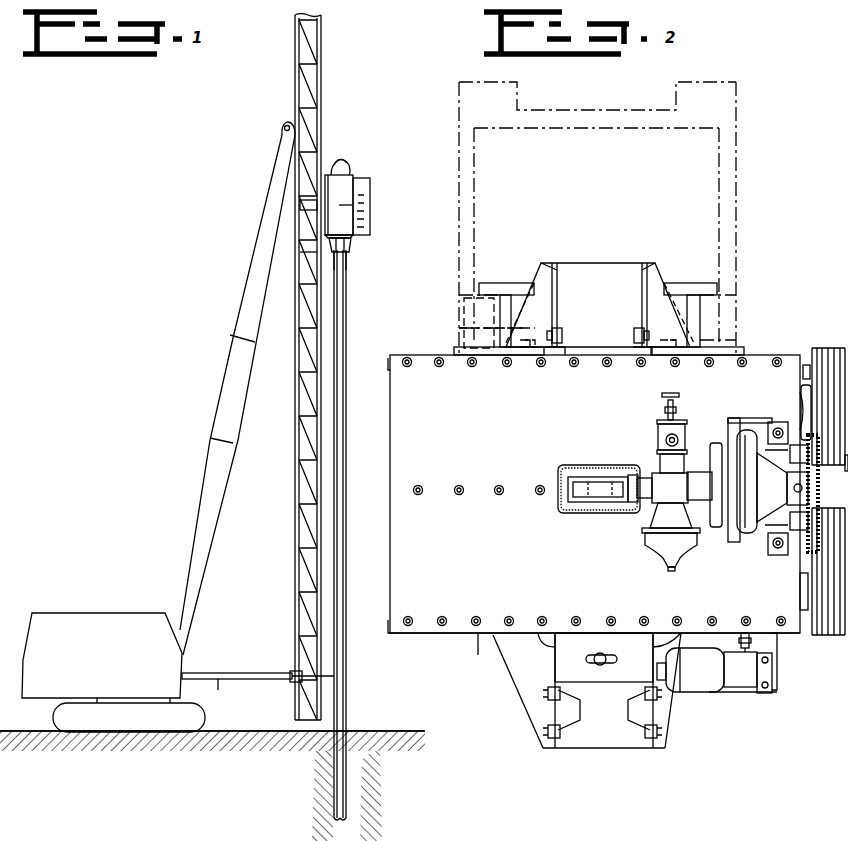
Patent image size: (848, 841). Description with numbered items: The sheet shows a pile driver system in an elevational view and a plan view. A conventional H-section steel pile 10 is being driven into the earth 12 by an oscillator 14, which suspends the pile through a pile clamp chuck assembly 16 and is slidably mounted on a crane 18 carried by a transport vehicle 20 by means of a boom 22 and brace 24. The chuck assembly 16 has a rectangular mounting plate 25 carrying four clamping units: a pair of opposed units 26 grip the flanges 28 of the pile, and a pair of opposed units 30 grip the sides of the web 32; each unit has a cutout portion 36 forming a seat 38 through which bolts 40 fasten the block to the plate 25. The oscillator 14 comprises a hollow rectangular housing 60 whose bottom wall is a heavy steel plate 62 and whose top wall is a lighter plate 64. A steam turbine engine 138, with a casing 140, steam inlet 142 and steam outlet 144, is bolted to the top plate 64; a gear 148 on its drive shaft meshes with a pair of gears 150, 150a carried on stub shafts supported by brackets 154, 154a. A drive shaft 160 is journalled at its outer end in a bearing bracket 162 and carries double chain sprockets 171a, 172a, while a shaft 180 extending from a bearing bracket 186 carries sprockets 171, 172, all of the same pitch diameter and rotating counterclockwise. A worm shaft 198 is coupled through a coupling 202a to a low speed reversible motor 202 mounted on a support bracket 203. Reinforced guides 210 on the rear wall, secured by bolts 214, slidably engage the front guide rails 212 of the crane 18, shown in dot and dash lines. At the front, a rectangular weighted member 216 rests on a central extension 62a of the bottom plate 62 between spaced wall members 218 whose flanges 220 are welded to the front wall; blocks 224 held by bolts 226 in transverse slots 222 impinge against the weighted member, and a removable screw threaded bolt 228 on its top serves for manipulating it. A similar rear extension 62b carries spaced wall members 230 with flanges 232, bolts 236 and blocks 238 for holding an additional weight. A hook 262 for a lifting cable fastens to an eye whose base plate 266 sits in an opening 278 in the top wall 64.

In FIG. 1, the H-section steel pile 10 is at (352, 675).
In FIG. 1, the earth 12 is at (268, 732).
In FIG. 1, the oscillator 14 is at (352, 177).
In FIG. 2, the oscillator 14 is at (462, 643).
In FIG. 1, the pile clamp chuck assembly 16 is at (350, 242).
In FIG. 1, the crane 18 is at (296, 479).
In FIG. 2, the crane 18 is at (739, 162).
In FIG. 1, the transport vehicle 20 is at (93, 615).
In FIG. 1, the boom 22 is at (221, 386).
In FIG. 1, the brace 24 is at (250, 673).
In FIG. 2, the mounting plate 25 is at (460, 840).
In FIG. 1, the clamping units 26 is at (345, 253).
In FIG. 1, the flanges 28 is at (338, 320).
In FIG. 1, the clamping units 30 is at (343, 262).
In FIG. 1, the web 32 is at (344, 330).
In FIG. 1, the cutout portion 36 is at (171, 834).
In FIG. 1, the seat 38 is at (269, 834).
In FIG. 1, the bolts 40 is at (219, 834).
In FIG. 1, the housing 60 is at (345, 205).
In FIG. 1, the bottom plate 62 is at (391, 447).
In FIG. 2, the bottom plate 62 is at (391, 447).
In FIG. 2, the extension of bottom plate 62a is at (610, 752).
In FIG. 2, the extension of bottom plate 62b is at (585, 265).
In FIG. 1, the top plate 64 is at (416, 472).
In FIG. 2, the top plate 64 is at (416, 472).
In FIG. 1, the steam turbine engine 138 is at (341, 163).
In FIG. 2, the steam turbine engine 138 is at (650, 455).
In FIG. 2, the engine casing 140 is at (715, 448).
In FIG. 2, the steam inlet 142 is at (665, 436).
In FIG. 2, the steam outlet 144 is at (735, 432).
In FIG. 2, the gear 148 is at (805, 505).
In FIG. 2, the gear 150 is at (790, 535).
In FIG. 2, the gear 150a is at (775, 455).
In FIG. 2, the bracket 154 is at (800, 555).
In FIG. 2, the bracket 154a is at (795, 470).
In FIG. 2, the drive shaft 160 is at (840, 348).
In FIG. 2, the bearing bracket 162 is at (805, 390).
In FIG. 2, the double chain sprocket 171 is at (835, 640).
In FIG. 2, the double chain sprocket 171a is at (828, 350).
In FIG. 2, the double chain sprocket 172 is at (830, 640).
In FIG. 2, the double chain sprocket 172a is at (822, 360).
In FIG. 2, the shaft 180 is at (845, 640).
In FIG. 2, the bearing bracket 186 is at (800, 600).
In FIG. 2, the worm shaft 198 is at (744, 633).
In FIG. 2, the low speed reversible motor 202 is at (700, 695).
In FIG. 2, the coupling 202a is at (742, 640).
In FIG. 2, the support bracket 203 is at (770, 690).
In FIG. 1, the reinforced guides 210 is at (305, 205).
In FIG. 2, the reinforced guides 210 is at (495, 283).
In FIG. 1, the front guide rails 212 is at (316, 252).
In FIG. 2, the front guide rails 212 is at (486, 318).
In FIG. 2, the bolts 214 is at (510, 330).
In FIG. 2, the weighted member 216 is at (587, 632).
In FIG. 1, the wall members 218 is at (368, 195).
In FIG. 2, the wall members 218 is at (553, 700).
In FIG. 2, the flanges 220 is at (545, 645).
In FIG. 1, the transverse slots 222 is at (368, 186).
In FIG. 2, the blocks 224 is at (604, 710).
In FIG. 2, the bolts 226 is at (548, 730).
In FIG. 2, the screw threaded bolt 228 is at (600, 655).
In FIG. 2, the wall members 230 is at (555, 280).
In FIG. 2, the flanges 232 is at (645, 347).
In FIG. 2, the bolts 236 is at (645, 330).
In FIG. 2, the blocks 238 is at (645, 337).
In FIG. 2, the hook 262 is at (600, 478).
In FIG. 2, the base plate of eye 266 is at (585, 490).
In FIG. 2, the opening 278 is at (565, 512).